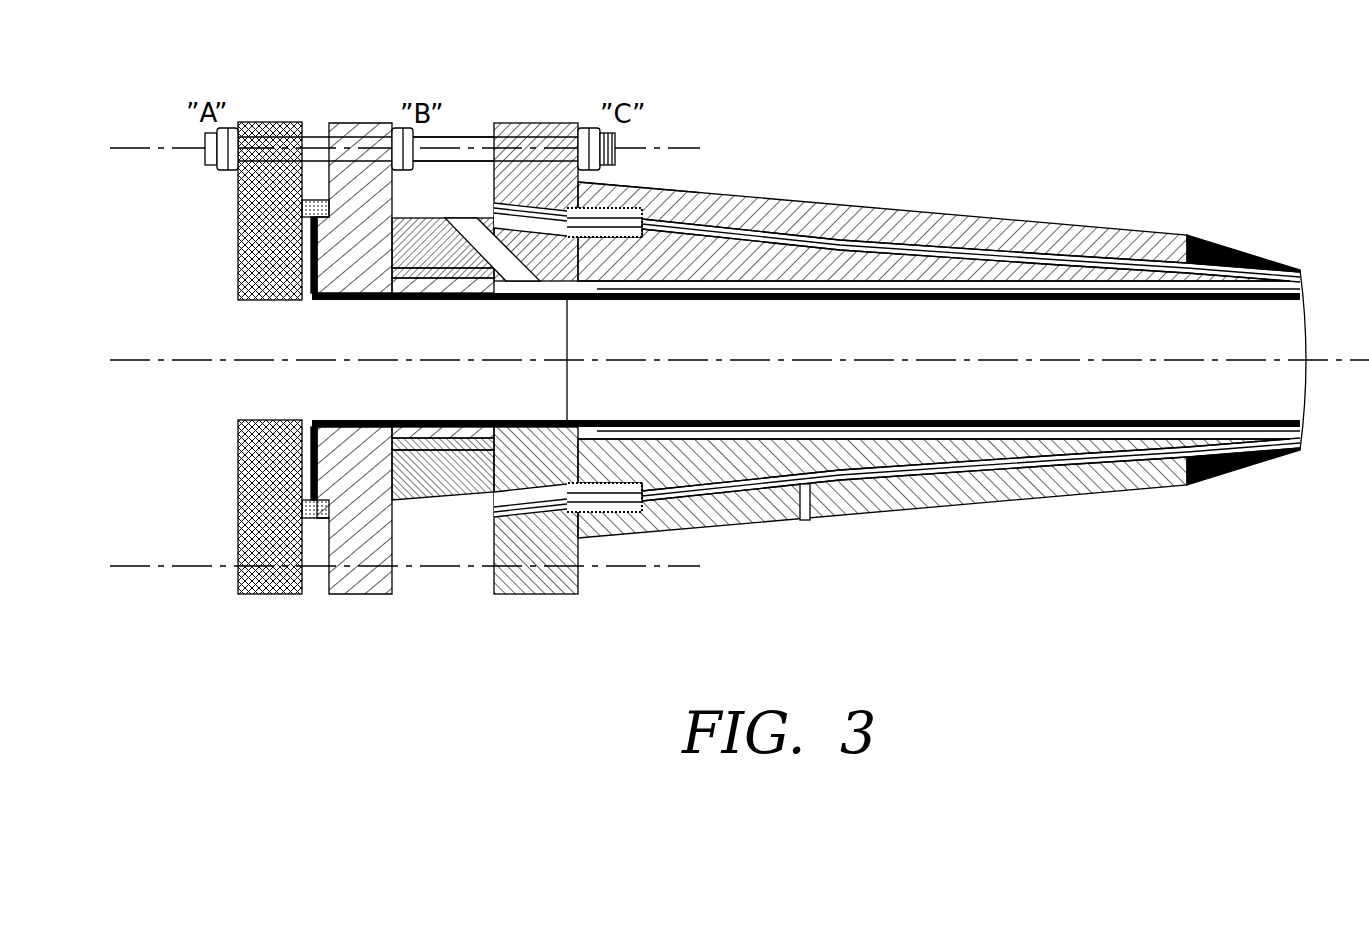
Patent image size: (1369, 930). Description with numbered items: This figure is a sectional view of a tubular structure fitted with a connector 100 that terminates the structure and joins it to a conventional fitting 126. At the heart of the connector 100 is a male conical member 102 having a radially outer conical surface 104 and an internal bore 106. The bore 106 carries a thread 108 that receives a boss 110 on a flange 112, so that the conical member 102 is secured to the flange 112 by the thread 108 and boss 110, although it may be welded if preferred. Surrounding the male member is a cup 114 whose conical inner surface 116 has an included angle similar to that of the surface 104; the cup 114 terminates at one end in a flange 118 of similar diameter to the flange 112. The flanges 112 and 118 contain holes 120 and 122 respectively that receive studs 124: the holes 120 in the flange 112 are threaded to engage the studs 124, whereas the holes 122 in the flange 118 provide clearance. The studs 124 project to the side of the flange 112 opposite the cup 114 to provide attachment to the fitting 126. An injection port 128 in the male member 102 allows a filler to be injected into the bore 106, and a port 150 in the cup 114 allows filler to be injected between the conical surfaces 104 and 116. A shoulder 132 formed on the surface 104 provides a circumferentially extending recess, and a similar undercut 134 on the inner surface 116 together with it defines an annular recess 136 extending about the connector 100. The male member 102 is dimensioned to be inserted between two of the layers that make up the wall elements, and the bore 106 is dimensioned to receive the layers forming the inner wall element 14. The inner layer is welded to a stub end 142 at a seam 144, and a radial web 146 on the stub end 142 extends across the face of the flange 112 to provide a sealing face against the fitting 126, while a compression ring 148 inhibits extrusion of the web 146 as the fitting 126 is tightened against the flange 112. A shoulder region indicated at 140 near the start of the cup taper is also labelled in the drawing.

The inner wall element 14 is at (1063, 303).
The connector 100 is at (890, 520).
The male conical member 102 is at (710, 258).
The radially outer conical surface 104 is at (880, 250).
The internal bore 106 is at (880, 396).
The thread 108 is at (457, 270).
The boss 110 is at (360, 240).
The flange 112 is at (362, 160).
The cup 114 is at (903, 213).
The conical inner surface 116 is at (1030, 256).
The flange 118 is at (546, 140).
The holes 120 is at (374, 150).
The holes 122 is at (512, 140).
The studs 124 is at (470, 163).
The fitting 126 is at (267, 580).
The injection port 128 is at (547, 287).
The shoulder 132 is at (658, 490).
The undercut 134 is at (493, 517).
The annular recess 136 is at (493, 492).
The shoulder 140 is at (608, 183).
The stub end 142 is at (345, 300).
The seam 144 is at (567, 419).
The radial web 146 is at (312, 243).
The compression ring 148 is at (318, 497).
The port 150 is at (805, 520).